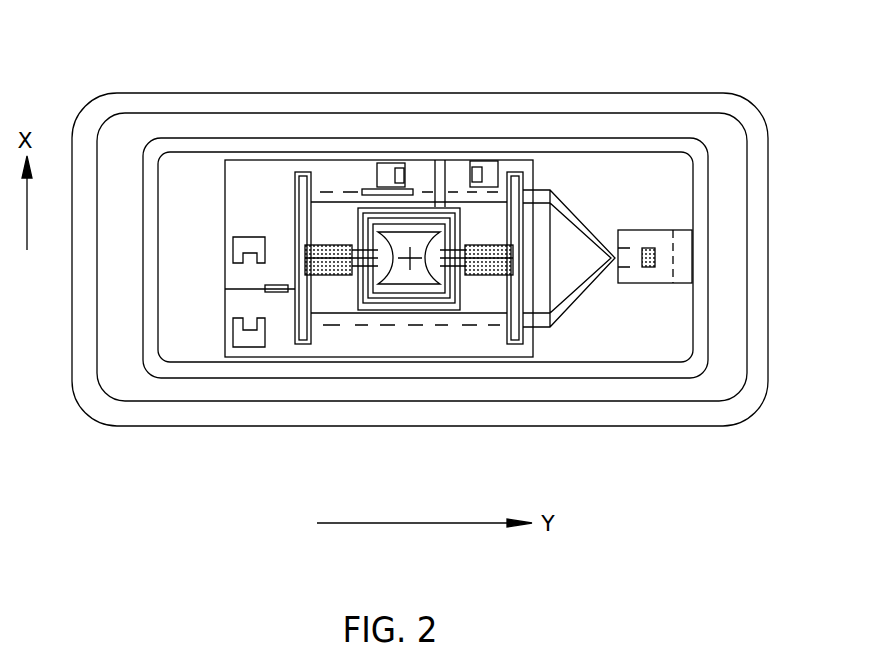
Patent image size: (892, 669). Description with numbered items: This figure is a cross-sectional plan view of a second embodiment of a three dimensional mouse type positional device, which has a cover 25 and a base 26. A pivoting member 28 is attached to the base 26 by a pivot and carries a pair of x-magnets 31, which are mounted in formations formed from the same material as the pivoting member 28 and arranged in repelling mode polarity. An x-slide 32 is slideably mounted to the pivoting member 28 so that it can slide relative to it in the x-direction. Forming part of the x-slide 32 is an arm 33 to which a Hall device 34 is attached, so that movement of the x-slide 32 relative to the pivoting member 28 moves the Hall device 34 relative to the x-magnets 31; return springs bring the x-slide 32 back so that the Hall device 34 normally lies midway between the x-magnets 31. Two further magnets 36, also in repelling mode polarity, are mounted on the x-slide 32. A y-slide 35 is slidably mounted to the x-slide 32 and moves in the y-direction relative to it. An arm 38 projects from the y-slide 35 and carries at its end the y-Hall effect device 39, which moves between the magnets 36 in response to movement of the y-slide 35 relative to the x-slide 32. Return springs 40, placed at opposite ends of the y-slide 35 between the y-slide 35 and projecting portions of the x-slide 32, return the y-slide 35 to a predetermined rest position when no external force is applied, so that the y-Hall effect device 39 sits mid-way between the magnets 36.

The cover 25 is at (769, 340).
The base 26 is at (703, 262).
The pivoting member 28 is at (575, 297).
The x-magnets 31 is at (248, 241).
The x-slide 32 is at (325, 346).
The arm 33 is at (278, 298).
The Hall device 34 is at (247, 289).
The y-slide 35 is at (412, 277).
The magnets 36 is at (396, 168).
The arm 38 is at (431, 191).
The y-Hall effect device 39 is at (448, 167).
The return springs 40 is at (323, 247).